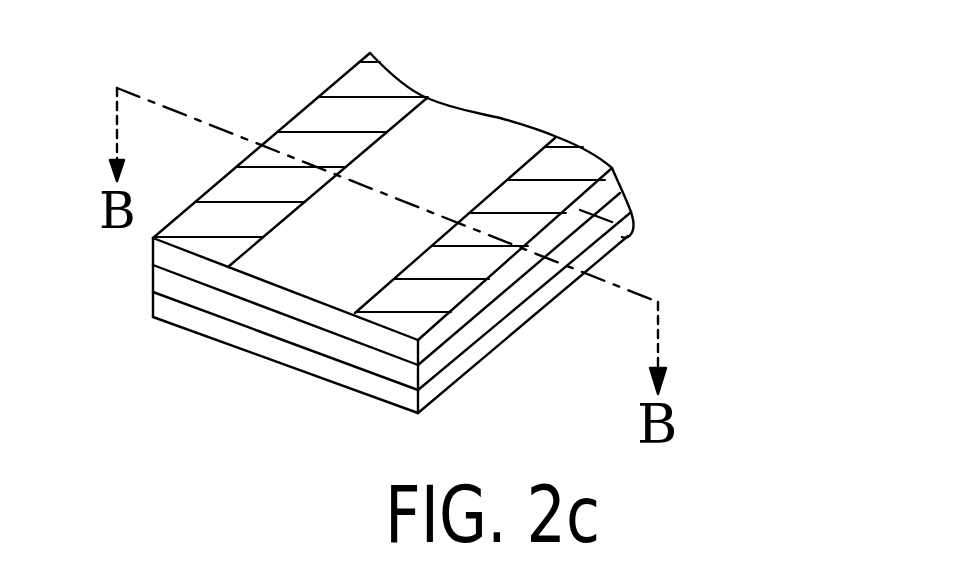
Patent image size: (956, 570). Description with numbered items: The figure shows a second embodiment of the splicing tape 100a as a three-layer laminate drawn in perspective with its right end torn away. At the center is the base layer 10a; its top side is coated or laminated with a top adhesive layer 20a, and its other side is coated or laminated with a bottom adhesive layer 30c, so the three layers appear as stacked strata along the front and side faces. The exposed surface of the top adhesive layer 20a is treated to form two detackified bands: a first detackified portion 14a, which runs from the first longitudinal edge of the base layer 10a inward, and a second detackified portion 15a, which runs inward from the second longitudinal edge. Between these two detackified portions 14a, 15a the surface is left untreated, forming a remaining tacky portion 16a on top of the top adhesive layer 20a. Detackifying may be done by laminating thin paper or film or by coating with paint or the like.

The splicing tape 100a is at (687, 153).
The first detackified portion 14a is at (338, 103).
The remaining tacky portion 16a is at (465, 123).
The second detackified portion 15a is at (587, 165).
The top adhesive layer 20a is at (622, 237).
The base layer 10a is at (507, 300).
The bottom adhesive layer 30c is at (443, 382).